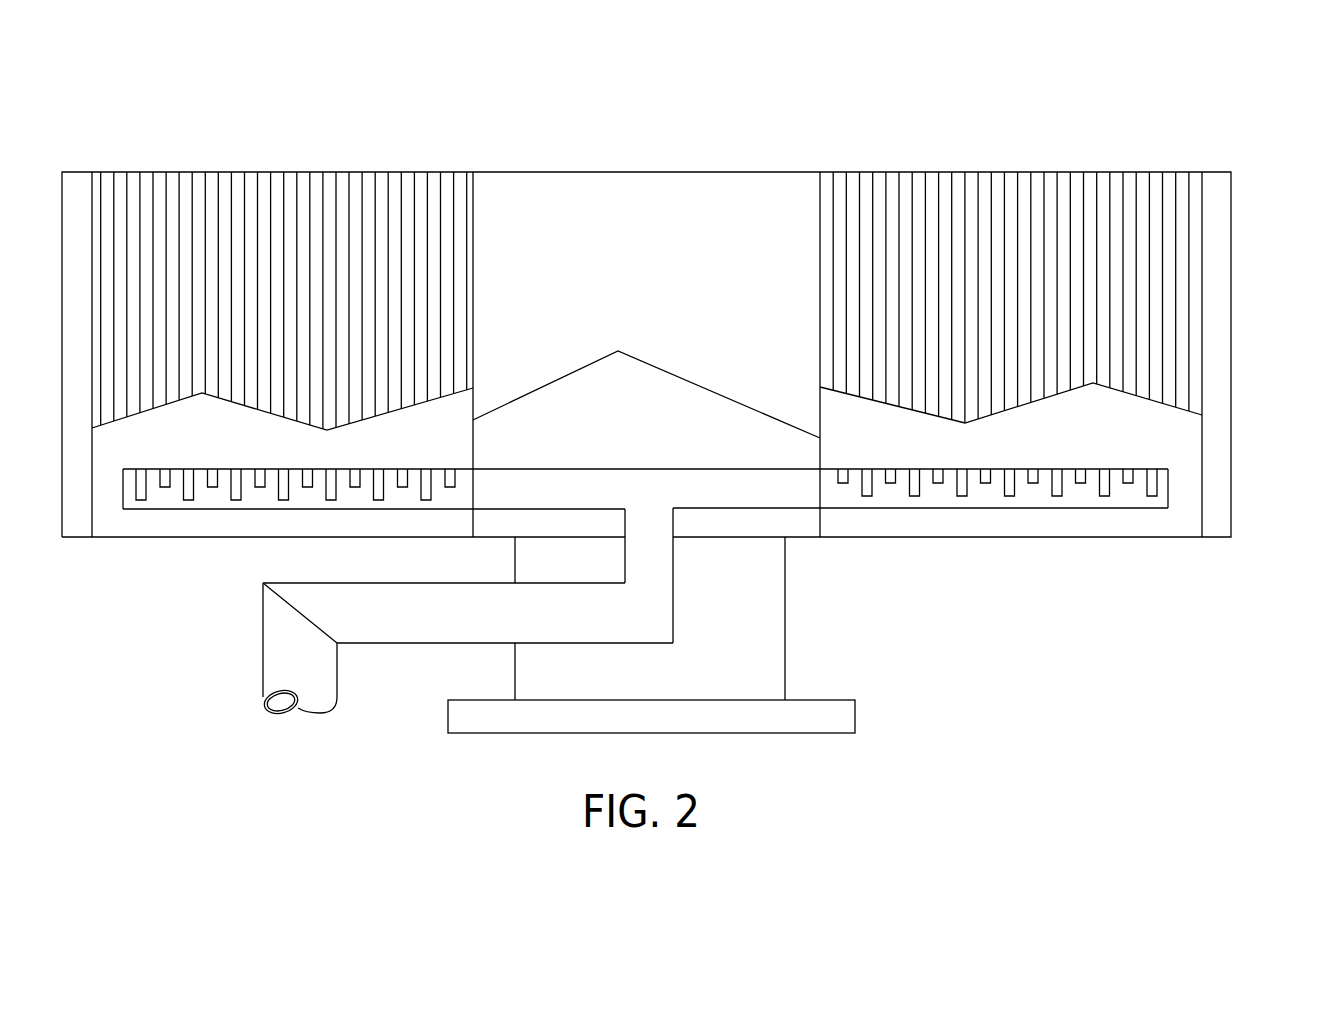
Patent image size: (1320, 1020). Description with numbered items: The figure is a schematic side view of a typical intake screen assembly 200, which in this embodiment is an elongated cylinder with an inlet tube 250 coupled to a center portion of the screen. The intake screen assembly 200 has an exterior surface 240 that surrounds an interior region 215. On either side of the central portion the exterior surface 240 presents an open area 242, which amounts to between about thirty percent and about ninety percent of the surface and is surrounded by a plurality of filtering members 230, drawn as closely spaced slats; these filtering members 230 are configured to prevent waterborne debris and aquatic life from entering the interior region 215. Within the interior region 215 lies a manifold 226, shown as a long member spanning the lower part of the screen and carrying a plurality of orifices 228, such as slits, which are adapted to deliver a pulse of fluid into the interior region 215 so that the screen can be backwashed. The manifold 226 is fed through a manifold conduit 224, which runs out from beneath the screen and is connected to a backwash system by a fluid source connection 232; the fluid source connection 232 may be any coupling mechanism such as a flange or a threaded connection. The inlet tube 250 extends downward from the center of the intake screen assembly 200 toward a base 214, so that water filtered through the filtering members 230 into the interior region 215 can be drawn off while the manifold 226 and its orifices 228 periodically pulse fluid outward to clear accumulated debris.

The intake screen assembly 200 is at (1200, 132).
The exterior surface 240 is at (632, 172).
The open area 242 is at (701, 259).
The filtering members 230 is at (818, 152).
The interior region 215 is at (843, 449).
The manifold 226 is at (714, 528).
The orifices 228 is at (1127, 484).
The manifold conduit 224 is at (320, 583).
The fluid source connection 232 is at (265, 696).
The inlet tube 250 is at (786, 642).
The base 214 is at (856, 713).